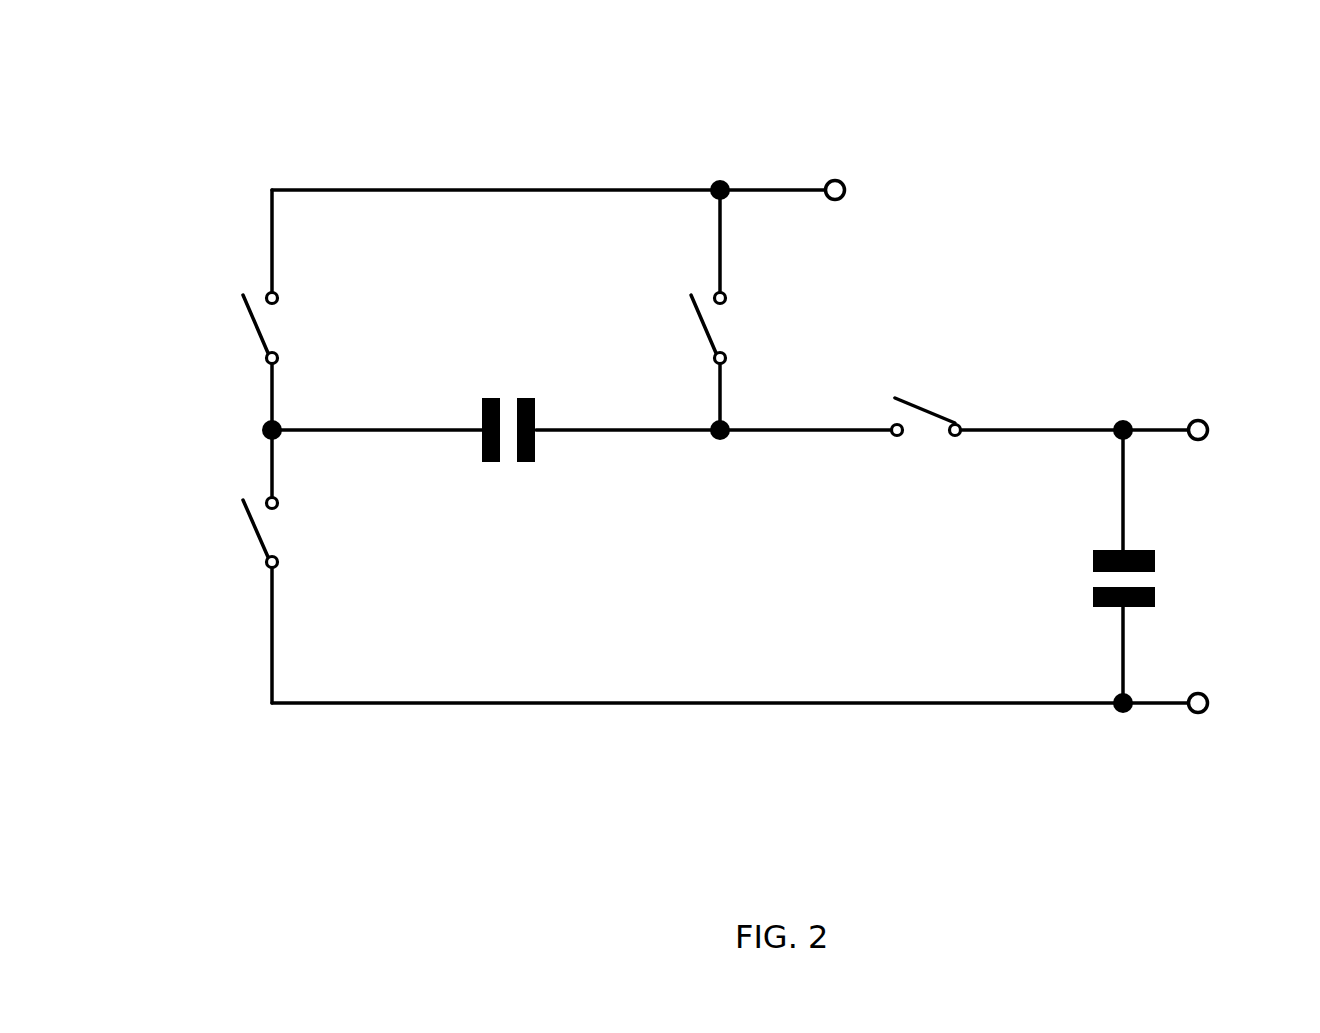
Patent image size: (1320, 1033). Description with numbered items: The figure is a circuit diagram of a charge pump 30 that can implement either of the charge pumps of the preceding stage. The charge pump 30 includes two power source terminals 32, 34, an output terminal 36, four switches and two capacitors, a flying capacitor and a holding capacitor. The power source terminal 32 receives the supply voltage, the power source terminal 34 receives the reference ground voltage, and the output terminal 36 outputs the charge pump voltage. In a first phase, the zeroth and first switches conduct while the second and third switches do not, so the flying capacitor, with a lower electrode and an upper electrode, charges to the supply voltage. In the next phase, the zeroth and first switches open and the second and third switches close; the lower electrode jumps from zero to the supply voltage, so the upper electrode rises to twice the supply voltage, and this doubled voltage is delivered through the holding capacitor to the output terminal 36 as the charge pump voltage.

The charge pump 30 is at (200, 57).
The power source terminal 32 is at (835, 178).
The power source terminal 34 is at (1199, 714).
The output terminal 36 is at (1198, 418).